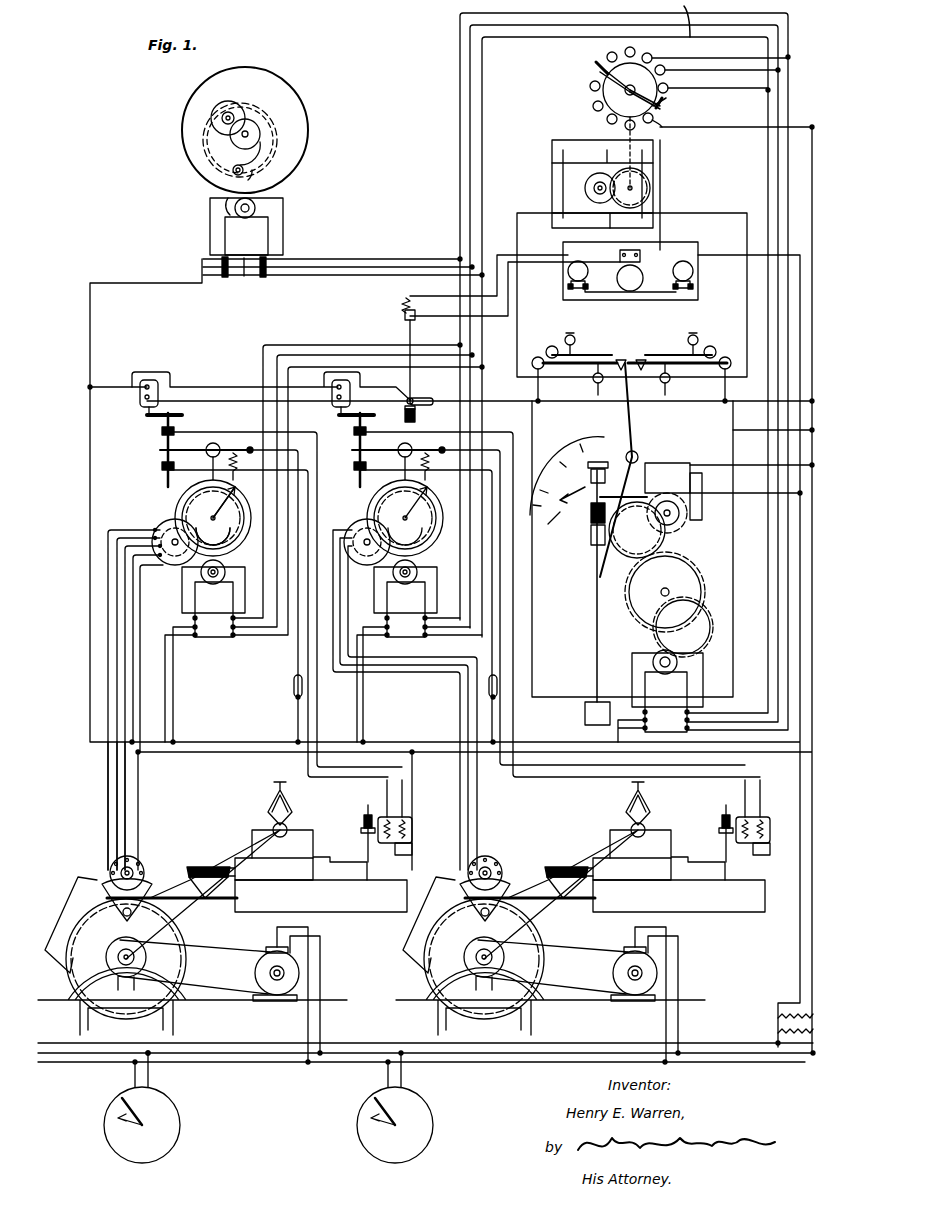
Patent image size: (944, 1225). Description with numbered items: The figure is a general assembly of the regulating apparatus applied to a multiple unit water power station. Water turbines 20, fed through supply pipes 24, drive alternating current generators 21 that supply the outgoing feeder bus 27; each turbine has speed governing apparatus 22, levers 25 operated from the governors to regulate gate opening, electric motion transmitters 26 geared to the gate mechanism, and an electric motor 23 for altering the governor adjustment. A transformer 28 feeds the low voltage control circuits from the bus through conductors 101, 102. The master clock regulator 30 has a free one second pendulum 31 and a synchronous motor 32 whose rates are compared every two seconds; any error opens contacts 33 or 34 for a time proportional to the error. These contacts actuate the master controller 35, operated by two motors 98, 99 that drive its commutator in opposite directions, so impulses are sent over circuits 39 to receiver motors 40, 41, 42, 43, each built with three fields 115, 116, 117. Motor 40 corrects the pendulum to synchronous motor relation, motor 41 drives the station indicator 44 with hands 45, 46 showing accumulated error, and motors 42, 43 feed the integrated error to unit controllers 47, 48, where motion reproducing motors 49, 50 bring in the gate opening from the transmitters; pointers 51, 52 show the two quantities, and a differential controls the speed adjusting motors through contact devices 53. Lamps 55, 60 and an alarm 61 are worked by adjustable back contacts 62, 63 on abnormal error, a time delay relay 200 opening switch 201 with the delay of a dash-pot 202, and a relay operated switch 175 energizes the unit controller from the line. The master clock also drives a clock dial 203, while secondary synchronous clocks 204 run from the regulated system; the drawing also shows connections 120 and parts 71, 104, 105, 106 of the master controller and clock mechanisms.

The water turbines 20 is at (371, 932).
The alternating current generators 21 is at (465, 994).
The speed governing apparatus 22 is at (489, 847).
The electric motor 23 is at (412, 823).
The supply pipes 24 is at (75, 928).
The levers 25 is at (106, 898).
The electric motion transmitters 26 is at (112, 870).
The outgoing feeder bus 27 is at (700, 1050).
The transformer 28 is at (776, 1024).
The master clock regulator 30 is at (571, 463).
The pendulum 31 is at (595, 608).
The synchronous motor 32 is at (675, 463).
The contacts 33 is at (590, 372).
The contacts 34 is at (670, 372).
The master controller 35 is at (590, 92).
The circuits 39 is at (675, 19).
The receiver motor 40 is at (690, 690).
The receiver motor 41 is at (283, 229).
The receiver motor 42 is at (182, 600).
The receiver motor 43 is at (374, 608).
The station indicator 44 is at (195, 99).
The hand 45 is at (265, 80).
The hand 46 is at (248, 132).
The unit controller 47 is at (176, 500).
The unit controller 48 is at (368, 497).
The motion reproducing motor 49 is at (160, 519).
The motion reproducing motor 50 is at (352, 519).
The pointer 51 is at (213, 516).
The pointer 52 is at (217, 530).
The contact devices 53 is at (158, 450).
The lamp 55 is at (568, 272).
The lamp 60 is at (692, 268).
The alarm 61 is at (642, 274).
The adjustable back contact 62 is at (620, 358).
The adjustable back contact 63 is at (645, 358).
The gear train 71 is at (668, 548).
The motor 98 is at (552, 183).
The motor 99 is at (653, 172).
The conductor 101 is at (226, 755).
The conductor 102 is at (90, 332).
The brush 104 is at (664, 106).
The brush 105 is at (600, 60).
The contact segments 106 is at (607, 119).
The field 115 is at (223, 278).
The field 116 is at (246, 278).
The field 117 is at (266, 278).
The conductors 120 is at (108, 789).
The relay operated switch 175 is at (294, 686).
The time delay relay 200 is at (405, 307).
The switch 201 is at (418, 398).
The dash-pot 202 is at (415, 414).
The clock dial 203 is at (561, 513).
The synchronous motor driven clocks 204 is at (181, 1121).